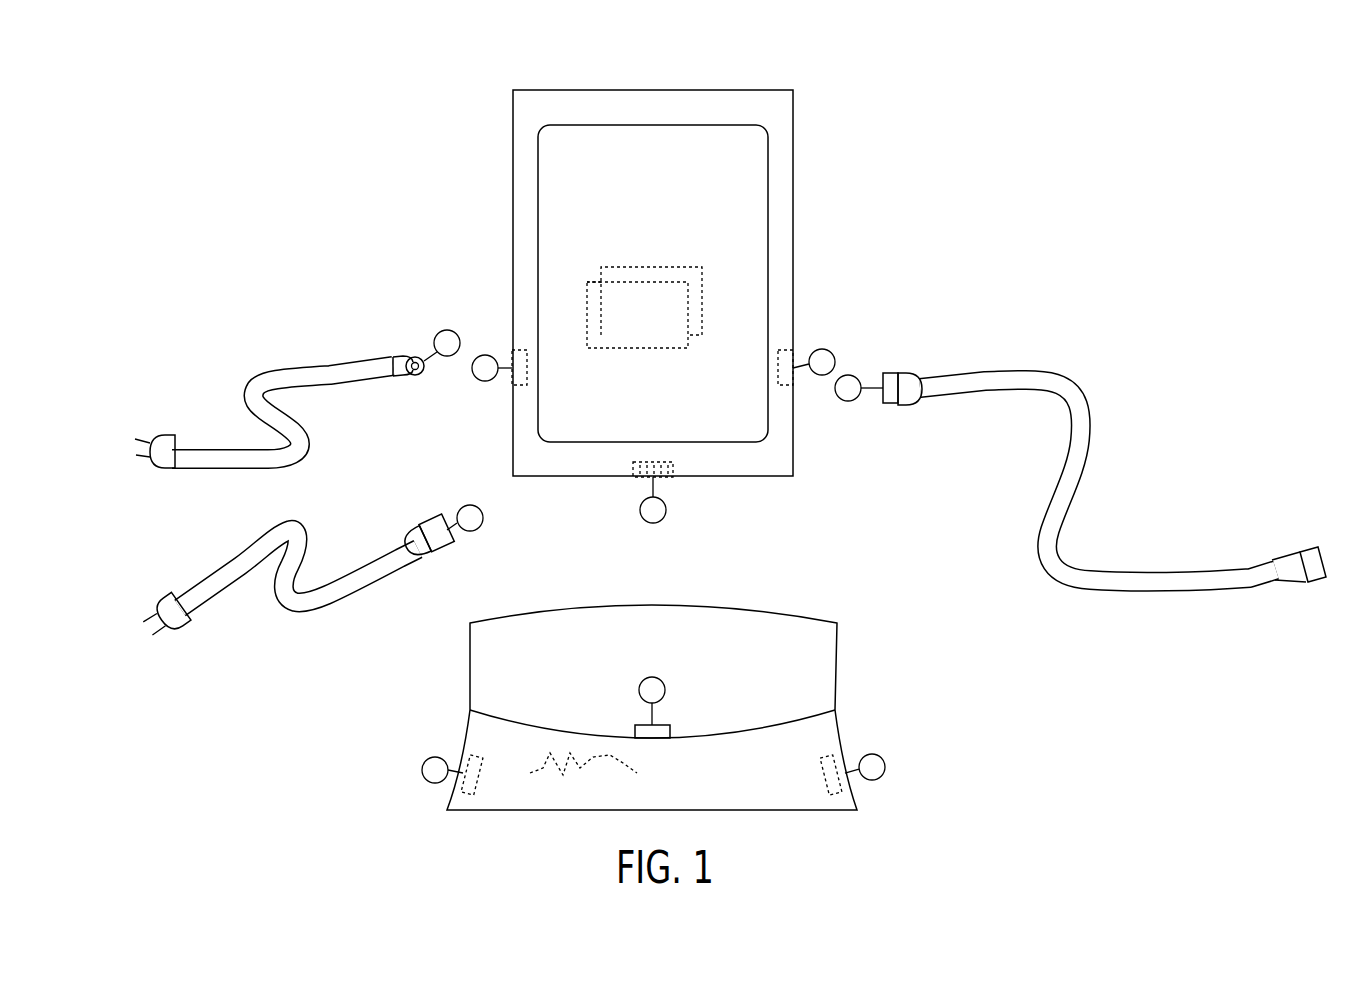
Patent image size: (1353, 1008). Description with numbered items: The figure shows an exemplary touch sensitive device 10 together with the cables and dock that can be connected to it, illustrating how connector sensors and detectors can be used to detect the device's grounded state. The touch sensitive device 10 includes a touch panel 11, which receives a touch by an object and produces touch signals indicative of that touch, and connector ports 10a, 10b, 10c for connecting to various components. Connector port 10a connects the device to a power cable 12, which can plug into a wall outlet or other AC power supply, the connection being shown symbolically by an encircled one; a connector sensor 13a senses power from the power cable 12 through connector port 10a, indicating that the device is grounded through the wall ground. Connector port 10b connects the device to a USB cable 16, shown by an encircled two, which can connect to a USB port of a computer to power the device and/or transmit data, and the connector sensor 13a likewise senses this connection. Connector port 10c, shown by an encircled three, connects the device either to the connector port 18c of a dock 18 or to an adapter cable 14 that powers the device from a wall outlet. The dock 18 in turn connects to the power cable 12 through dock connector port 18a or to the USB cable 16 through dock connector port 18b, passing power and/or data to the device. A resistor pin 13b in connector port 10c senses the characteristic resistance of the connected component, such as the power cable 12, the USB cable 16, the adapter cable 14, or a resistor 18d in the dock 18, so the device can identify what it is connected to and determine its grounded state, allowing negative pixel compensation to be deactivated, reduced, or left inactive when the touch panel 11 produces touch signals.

The touch sensitive device 10 is at (758, 90).
The touch panel 11 is at (772, 163).
The connector sensor 13a is at (688, 268).
The resistor pin 13b is at (650, 462).
The connector port 10a is at (512, 350).
The connector port 10b is at (795, 345).
The connector port 10c is at (678, 472).
The power cable 12 is at (306, 371).
The adapter cable 14 is at (247, 540).
The USB cable 16 is at (1048, 374).
The dock 18 is at (838, 660).
The dock connector port 18a is at (474, 805).
The dock connector port 18b is at (829, 805).
The connector port 18c is at (660, 740).
The resistor 18d is at (588, 778).